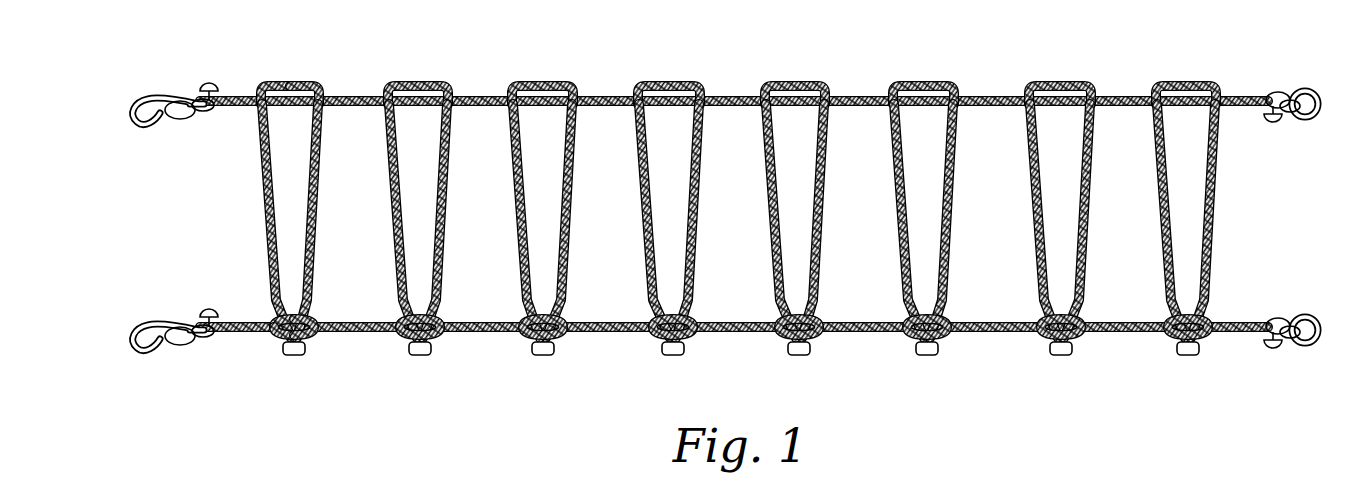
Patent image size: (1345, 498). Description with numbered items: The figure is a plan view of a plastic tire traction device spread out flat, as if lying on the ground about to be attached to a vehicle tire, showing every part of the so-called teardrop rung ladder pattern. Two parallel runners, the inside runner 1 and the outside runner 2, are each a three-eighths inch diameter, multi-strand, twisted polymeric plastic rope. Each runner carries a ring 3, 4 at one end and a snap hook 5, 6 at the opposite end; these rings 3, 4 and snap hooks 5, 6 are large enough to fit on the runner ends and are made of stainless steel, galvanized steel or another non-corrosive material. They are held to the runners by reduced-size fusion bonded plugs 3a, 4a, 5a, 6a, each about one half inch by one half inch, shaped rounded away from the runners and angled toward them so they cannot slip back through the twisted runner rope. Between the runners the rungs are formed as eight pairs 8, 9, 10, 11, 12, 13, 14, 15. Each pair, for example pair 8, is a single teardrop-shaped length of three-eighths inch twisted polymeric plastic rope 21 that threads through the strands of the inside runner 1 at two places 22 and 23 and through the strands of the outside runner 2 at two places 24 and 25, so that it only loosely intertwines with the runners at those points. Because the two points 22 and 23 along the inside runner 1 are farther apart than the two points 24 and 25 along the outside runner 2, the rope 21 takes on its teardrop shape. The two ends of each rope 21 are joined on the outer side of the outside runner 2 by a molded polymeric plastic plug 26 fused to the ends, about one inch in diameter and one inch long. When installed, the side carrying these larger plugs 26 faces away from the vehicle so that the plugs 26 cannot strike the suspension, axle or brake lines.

The inside runner 1 is at (736, 95).
The outside runner 2 is at (745, 335).
The ring 3 is at (1309, 90).
The fusion plug 3a is at (1274, 124).
The ring 4 is at (1308, 315).
The fusion plug 4a is at (1272, 350).
The snap hook 5 is at (149, 97).
The fusion plug 5a is at (211, 83).
The snap hook 6 is at (150, 327).
The fusion plug 6a is at (211, 311).
The rung pair 8 is at (292, 212).
The rung pair 9 is at (376, 179).
The rung pair 10 is at (500, 178).
The rung pair 11 is at (627, 176).
The rung pair 12 is at (754, 176).
The rung pair 13 is at (881, 168).
The rung pair 14 is at (1017, 168).
The rung pair 15 is at (1144, 168).
The rope 21 is at (266, 254).
The threading point 22 is at (250, 84).
The threading point 23 is at (340, 82).
The threading point 24 is at (268, 356).
The threading point 25 is at (320, 356).
The molded polymeric plastic plug 26 is at (300, 358).